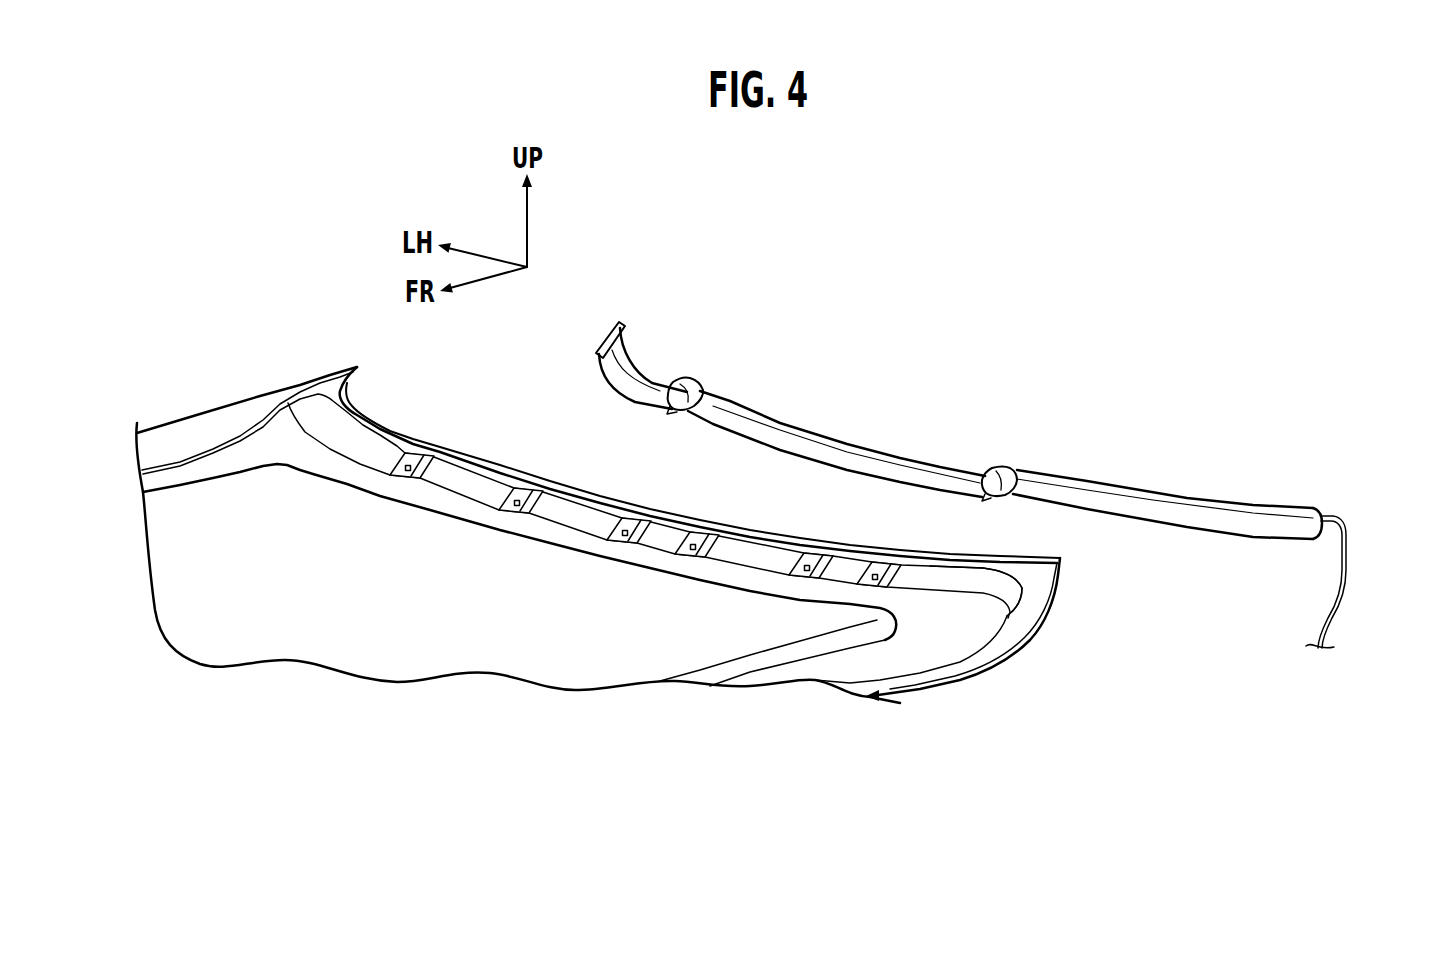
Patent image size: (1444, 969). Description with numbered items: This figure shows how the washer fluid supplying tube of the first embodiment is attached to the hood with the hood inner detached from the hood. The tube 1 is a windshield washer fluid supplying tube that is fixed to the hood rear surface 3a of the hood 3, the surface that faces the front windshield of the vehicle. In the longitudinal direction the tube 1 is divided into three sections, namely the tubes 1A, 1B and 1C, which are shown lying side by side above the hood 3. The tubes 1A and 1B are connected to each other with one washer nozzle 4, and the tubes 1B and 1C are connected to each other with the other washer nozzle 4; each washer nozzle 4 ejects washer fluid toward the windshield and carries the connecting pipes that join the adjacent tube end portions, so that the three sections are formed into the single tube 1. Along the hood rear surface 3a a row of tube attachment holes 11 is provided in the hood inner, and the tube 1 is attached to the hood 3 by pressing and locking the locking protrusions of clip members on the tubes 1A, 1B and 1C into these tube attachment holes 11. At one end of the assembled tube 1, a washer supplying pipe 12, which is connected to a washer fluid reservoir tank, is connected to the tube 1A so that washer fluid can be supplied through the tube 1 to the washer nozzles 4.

The tube 1 is at (959, 417).
The tube 1A is at (1184, 503).
The tube 1B is at (847, 441).
The tube 1C is at (657, 382).
The hood 3 is at (238, 408).
The hood rear surface 3a is at (953, 582).
The washer nozzle 4 is at (692, 381).
The tube attachment hole 11 is at (520, 506).
The washer supplying pipe 12 is at (1347, 563).